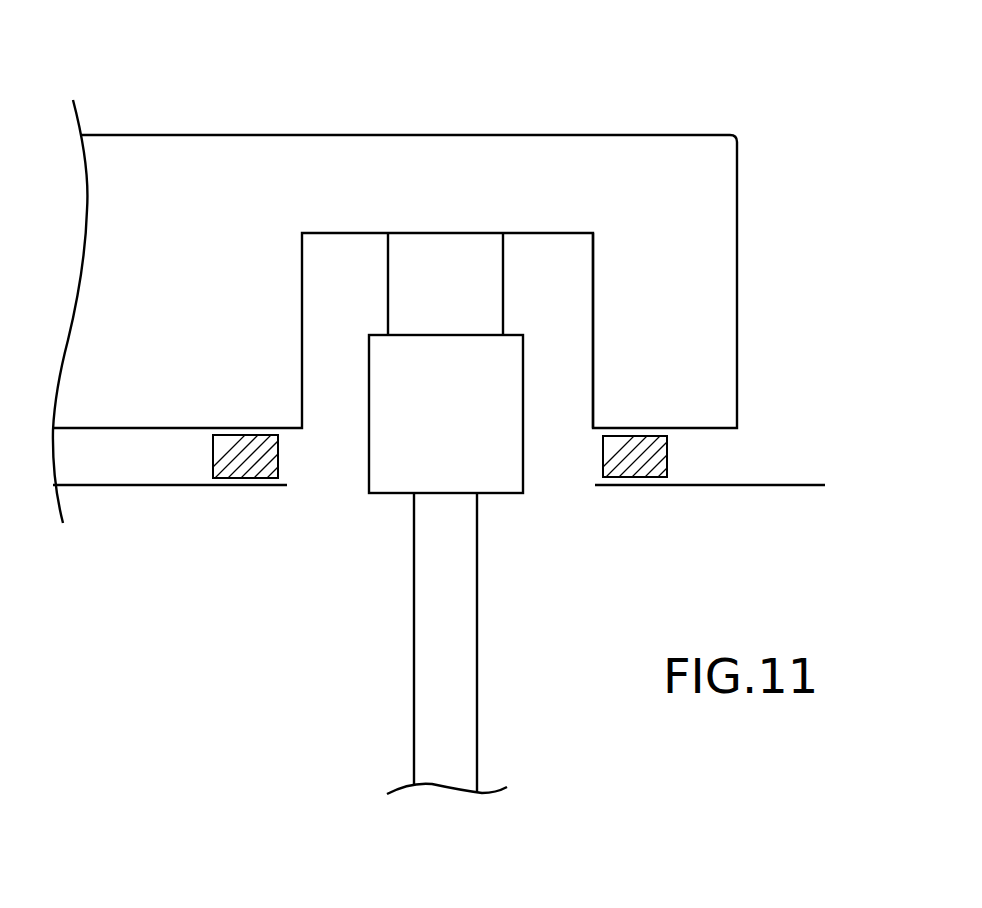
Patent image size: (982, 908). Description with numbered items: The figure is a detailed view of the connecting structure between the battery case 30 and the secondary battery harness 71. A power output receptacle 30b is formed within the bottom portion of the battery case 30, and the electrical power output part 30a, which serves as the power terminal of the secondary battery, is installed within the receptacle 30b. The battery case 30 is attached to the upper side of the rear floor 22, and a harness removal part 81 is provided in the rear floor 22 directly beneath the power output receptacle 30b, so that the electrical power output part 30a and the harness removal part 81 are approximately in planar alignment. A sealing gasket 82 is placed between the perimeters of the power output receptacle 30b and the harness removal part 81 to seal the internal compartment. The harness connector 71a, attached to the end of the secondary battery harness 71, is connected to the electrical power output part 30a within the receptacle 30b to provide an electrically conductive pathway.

The battery case 30 is at (338, 135).
The electrical power output part 30a is at (504, 275).
The power output receptacle 30b is at (563, 368).
The secondary battery harness 71 is at (413, 680).
The harness connector 71a is at (389, 494).
The rear floor 22 is at (805, 484).
The sealing gasket 82 is at (213, 455).
The harness removal part 81 is at (328, 482).